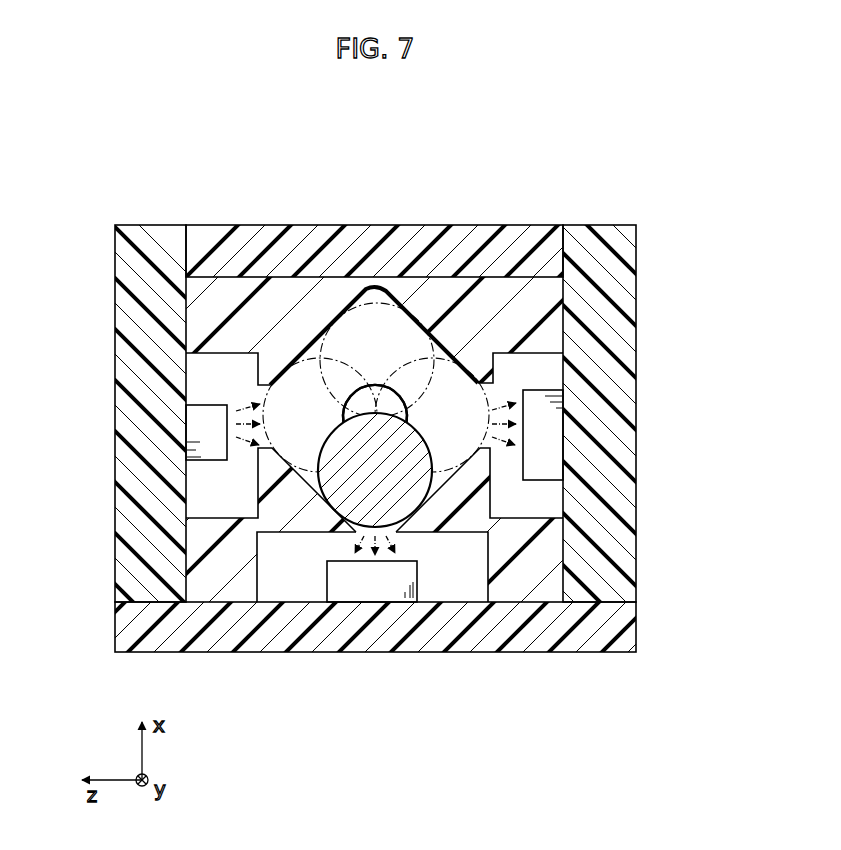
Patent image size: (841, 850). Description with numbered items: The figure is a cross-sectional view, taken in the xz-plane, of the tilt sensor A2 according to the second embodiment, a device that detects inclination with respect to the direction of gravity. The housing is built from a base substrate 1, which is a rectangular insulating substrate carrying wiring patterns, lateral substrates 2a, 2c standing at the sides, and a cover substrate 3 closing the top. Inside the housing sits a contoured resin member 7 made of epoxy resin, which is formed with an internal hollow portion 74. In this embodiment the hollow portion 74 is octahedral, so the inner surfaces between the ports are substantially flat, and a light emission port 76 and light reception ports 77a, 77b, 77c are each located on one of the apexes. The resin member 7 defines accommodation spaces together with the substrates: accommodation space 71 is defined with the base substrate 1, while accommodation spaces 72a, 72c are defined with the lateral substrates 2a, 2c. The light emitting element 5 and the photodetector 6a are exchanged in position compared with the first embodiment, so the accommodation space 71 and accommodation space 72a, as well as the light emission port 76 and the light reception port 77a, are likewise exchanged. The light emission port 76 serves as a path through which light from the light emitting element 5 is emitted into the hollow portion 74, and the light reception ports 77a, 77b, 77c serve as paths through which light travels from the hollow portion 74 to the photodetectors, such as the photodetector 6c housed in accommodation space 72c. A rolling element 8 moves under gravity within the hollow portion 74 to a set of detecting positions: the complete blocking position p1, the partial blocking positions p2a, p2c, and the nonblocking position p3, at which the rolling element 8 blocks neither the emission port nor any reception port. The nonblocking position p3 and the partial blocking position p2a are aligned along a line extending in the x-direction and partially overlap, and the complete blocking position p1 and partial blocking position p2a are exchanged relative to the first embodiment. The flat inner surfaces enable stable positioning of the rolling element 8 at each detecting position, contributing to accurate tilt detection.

The base substrate 1 is at (581, 626).
The lateral substrate 2a is at (165, 387).
The lateral substrate 2c is at (606, 432).
The cover substrate 3 is at (369, 300).
The light emitting element 5 is at (200, 434).
The photodetector 6a is at (358, 583).
The photodetector 6c is at (550, 460).
The resin member 7 is at (500, 330).
The rolling element 8 is at (408, 414).
The accommodation space 71 is at (203, 499).
The accommodation space 72a is at (300, 583).
The accommodation space 72c is at (550, 508).
The hollow portion 74 is at (314, 380).
The light emission port 76 is at (256, 392).
The light reception port 77a is at (401, 533).
The light reception port 77b is at (385, 390).
The light reception port 77c is at (494, 390).
The complete blocking position p1 is at (322, 358).
The partial blocking position p2a is at (427, 498).
The partial blocking position p2c is at (445, 358).
The nonblocking position p3 is at (363, 303).
The tilt sensor A2 is at (108, 158).